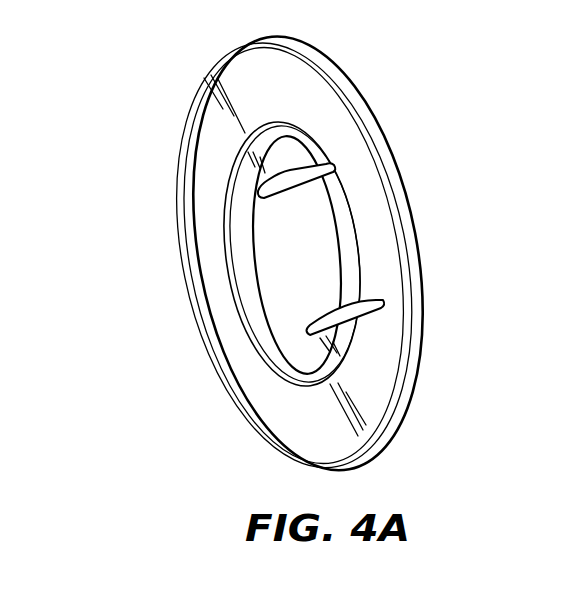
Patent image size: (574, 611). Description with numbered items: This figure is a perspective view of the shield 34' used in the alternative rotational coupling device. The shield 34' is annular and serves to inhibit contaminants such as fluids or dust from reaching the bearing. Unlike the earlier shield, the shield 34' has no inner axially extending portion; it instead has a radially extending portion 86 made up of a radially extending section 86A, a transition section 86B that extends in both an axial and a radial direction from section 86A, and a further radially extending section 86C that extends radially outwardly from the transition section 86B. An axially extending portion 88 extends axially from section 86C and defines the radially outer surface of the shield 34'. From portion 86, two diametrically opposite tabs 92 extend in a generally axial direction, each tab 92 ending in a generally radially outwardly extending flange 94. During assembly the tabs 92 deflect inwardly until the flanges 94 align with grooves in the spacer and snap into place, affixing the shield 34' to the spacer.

The shield 34' is at (265, 253).
The axially extending portion 88 is at (354, 99).
The radially extending portion 86 is at (242, 255).
The radially extending section 86A is at (252, 283).
The transition section 86B is at (232, 266).
The radially extending section 86C is at (205, 240).
The tab 92 is at (352, 311).
The flange 94 is at (381, 304).